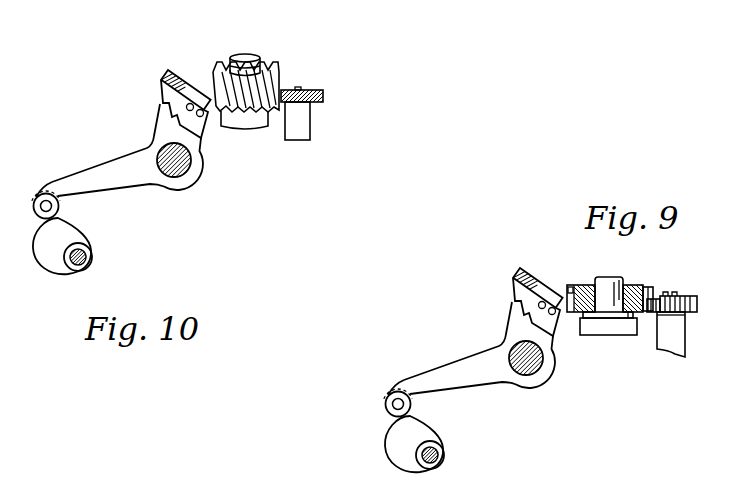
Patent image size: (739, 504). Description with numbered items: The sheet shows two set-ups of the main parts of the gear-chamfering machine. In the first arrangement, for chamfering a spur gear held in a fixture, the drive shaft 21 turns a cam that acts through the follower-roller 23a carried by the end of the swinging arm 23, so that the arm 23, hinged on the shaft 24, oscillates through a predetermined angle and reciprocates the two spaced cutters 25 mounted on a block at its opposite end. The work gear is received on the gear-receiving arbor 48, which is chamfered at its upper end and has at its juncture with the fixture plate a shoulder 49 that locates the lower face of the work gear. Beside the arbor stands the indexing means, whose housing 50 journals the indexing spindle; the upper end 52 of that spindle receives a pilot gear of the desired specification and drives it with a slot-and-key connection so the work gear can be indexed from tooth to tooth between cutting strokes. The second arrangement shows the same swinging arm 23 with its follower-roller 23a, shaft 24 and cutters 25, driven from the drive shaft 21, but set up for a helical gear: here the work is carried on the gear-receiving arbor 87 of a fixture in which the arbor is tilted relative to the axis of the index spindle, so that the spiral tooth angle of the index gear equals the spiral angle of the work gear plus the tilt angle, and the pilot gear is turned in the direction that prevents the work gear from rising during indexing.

In FIG. 10, the drive shaft 21 is at (92, 256).
In FIG. 9, the drive shaft 21 is at (444, 460).
In FIG. 10, the swinging arm 23 is at (106, 183).
In FIG. 9, the swinging arm 23 is at (462, 380).
In FIG. 10, the follower-roller 23a is at (38, 196).
In FIG. 9, the follower-roller 23a is at (389, 403).
In FIG. 10, the shaft 24 is at (185, 167).
In FIG. 9, the shaft 24 is at (530, 374).
In FIG. 10, the cutters 25 is at (193, 88).
In FIG. 9, the cutters 25 is at (530, 290).
In FIG. 9, the gear-receiving arbor 48 is at (613, 287).
In FIG. 9, the shoulder 49 is at (630, 337).
In FIG. 10, the housing 50 is at (316, 122).
In FIG. 9, the housing 50 is at (687, 343).
In FIG. 9, the upper end of indexing spindle 52 is at (678, 298).
In FIG. 10, the gear-receiving arbor 87 is at (259, 64).